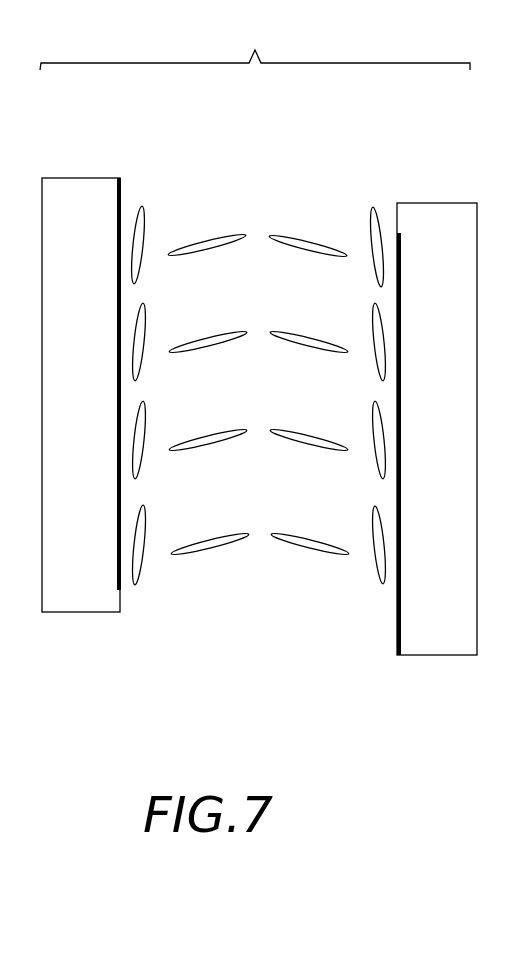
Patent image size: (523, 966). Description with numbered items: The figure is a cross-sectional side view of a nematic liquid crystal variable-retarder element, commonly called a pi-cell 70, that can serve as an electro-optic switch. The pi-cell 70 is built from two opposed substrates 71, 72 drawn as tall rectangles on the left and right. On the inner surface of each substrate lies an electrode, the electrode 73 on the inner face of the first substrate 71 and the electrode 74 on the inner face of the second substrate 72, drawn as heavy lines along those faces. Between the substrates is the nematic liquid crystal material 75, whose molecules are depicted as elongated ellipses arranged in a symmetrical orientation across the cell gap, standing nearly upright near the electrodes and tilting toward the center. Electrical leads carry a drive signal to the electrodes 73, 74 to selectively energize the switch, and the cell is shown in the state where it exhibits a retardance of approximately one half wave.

The pi-cell 70 is at (255, 43).
The substrate 71 is at (64, 178).
The substrate 72 is at (450, 203).
The electrode 73 is at (121, 583).
The electrode 74 is at (400, 625).
The nematic liquid crystal material 75 is at (215, 237).